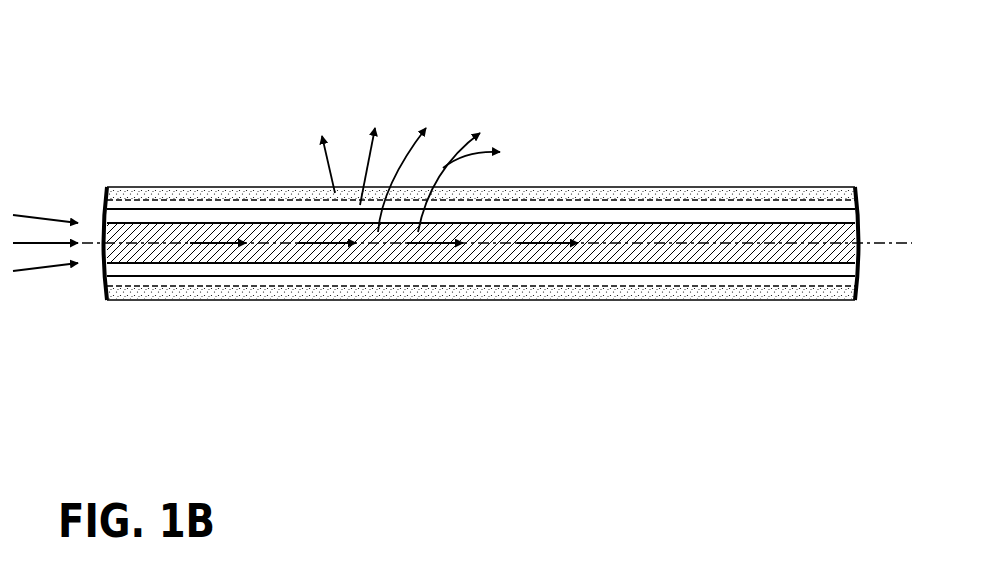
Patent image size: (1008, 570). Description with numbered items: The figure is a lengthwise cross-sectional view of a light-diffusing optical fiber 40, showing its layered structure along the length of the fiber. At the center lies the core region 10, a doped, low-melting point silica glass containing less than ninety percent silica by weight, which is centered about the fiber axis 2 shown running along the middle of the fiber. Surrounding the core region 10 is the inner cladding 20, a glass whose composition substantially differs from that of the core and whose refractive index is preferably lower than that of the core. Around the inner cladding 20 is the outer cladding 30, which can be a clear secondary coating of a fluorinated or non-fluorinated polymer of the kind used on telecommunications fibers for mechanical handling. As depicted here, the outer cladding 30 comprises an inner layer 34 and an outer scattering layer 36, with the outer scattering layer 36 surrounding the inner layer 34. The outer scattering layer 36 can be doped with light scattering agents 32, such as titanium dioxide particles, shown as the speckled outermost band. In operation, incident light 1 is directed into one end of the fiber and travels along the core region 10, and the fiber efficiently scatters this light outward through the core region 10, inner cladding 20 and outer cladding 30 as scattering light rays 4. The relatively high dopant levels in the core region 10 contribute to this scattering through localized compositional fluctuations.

The incident light 1 is at (52, 268).
The axis 2 is at (897, 242).
The scattering light rays 4 is at (329, 167).
The core region 10 is at (232, 248).
The inner cladding 20 is at (193, 270).
The outer cladding 30 is at (246, 120).
The light scattering agents 32 is at (565, 189).
The inner layer 34 is at (190, 208).
The outer scattering layer 36 is at (218, 196).
The light-diffusing optical fiber 40 is at (663, 124).